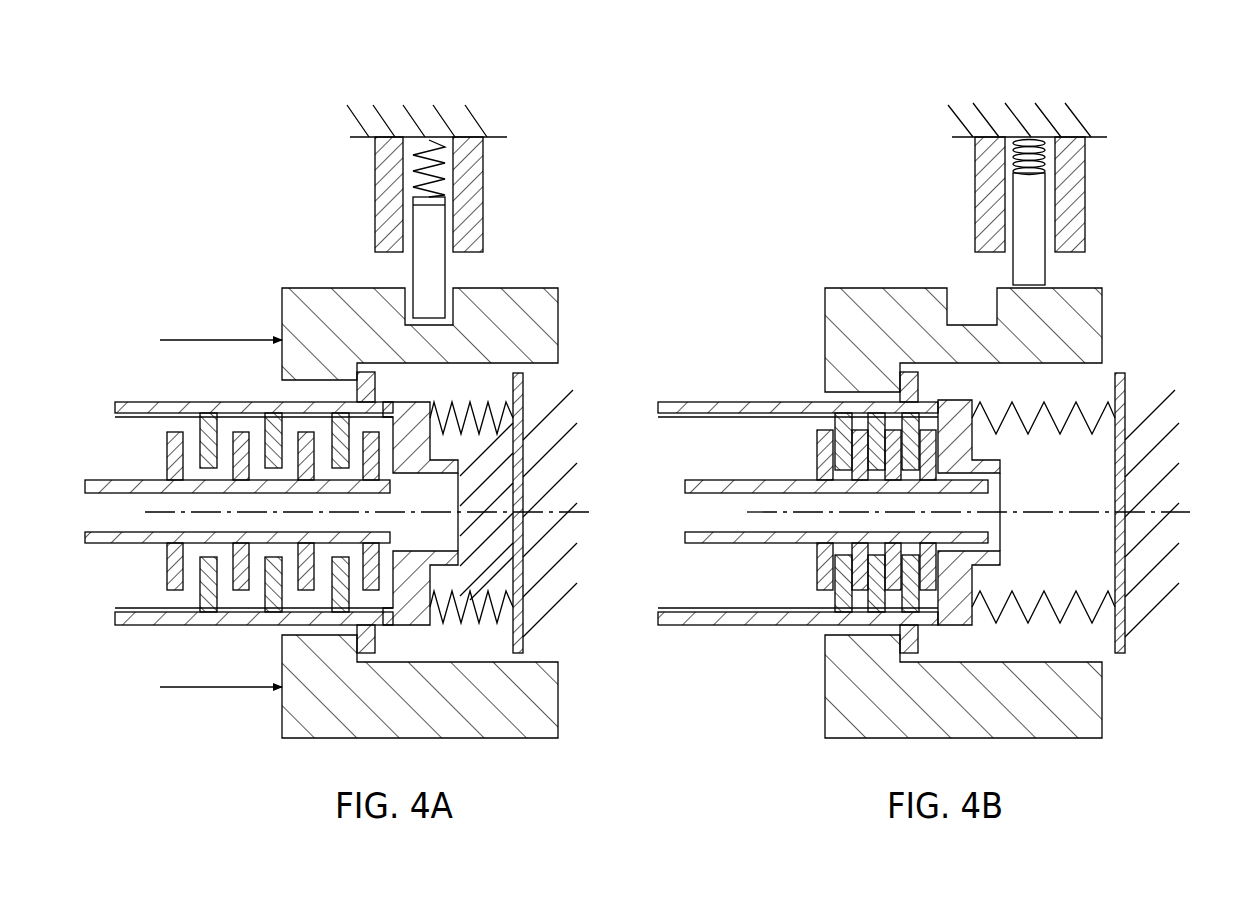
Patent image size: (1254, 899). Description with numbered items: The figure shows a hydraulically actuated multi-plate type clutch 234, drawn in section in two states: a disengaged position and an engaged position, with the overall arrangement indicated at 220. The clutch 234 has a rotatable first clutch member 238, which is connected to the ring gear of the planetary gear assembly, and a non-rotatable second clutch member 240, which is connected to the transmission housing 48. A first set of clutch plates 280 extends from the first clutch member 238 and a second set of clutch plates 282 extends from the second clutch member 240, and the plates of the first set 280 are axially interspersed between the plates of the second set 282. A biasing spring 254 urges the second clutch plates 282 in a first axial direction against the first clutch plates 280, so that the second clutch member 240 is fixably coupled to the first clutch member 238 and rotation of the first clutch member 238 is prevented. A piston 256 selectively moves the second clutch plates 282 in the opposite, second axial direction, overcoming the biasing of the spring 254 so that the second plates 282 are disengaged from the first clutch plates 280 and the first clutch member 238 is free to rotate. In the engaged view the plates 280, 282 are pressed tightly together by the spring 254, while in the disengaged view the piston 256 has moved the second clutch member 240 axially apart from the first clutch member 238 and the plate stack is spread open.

In FIG. 4A, the transmission housing 48 is at (480, 118).
In FIG. 4B, the transmission housing 48 is at (1070, 105).
In FIG. 4B, the connector assembly 220 is at (730, 88).
In FIG. 4A, the multi-plate type clutch 234 is at (590, 244).
In FIG. 4A, the first clutch member 238 is at (85, 487).
In FIG. 4B, the first clutch member 238 is at (695, 486).
In FIG. 4A, the second clutch member 240 is at (143, 404).
In FIG. 4B, the second clutch member 240 is at (708, 403).
In FIG. 4B, the biasing spring 254 is at (1075, 430).
In FIG. 4B, the piston 256 is at (850, 308).
In FIG. 4A, the first set of clutch plates 280 is at (167, 565).
In FIG. 4A, the second set of clutch plates 282 is at (205, 590).